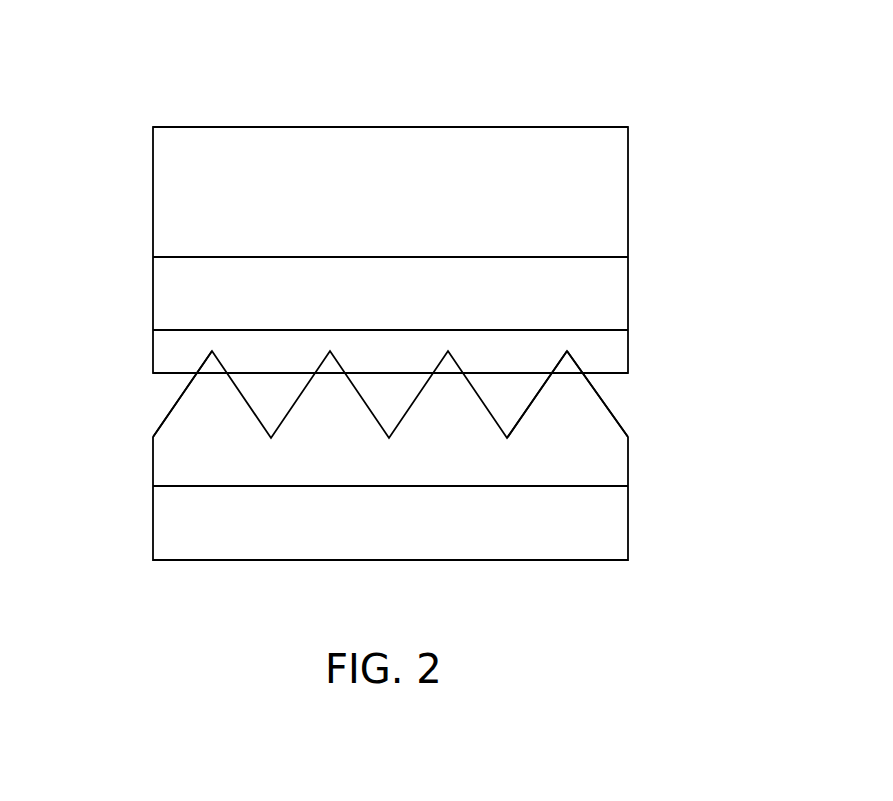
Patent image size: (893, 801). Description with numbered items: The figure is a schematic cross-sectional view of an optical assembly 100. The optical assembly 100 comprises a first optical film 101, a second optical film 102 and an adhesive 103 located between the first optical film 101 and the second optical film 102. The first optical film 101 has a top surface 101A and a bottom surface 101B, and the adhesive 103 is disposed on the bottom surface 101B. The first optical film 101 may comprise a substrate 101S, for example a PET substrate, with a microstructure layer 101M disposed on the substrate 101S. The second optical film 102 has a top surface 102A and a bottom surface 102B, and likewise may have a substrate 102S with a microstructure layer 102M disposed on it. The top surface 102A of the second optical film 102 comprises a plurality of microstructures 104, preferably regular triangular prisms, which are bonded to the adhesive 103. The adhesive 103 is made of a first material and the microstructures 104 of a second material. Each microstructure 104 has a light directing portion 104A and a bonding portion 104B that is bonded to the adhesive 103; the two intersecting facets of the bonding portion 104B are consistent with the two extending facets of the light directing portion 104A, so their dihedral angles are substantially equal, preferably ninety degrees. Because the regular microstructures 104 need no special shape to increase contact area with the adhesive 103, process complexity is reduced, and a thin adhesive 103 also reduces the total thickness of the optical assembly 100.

The optical assembly 100 is at (738, 34).
The first optical film 101 is at (253, 213).
The top surface 101A is at (518, 127).
The bottom surface 101B is at (573, 332).
The microstructure layer 101M is at (180, 175).
The substrate 101S is at (183, 275).
The second optical film 102 is at (293, 523).
The top surface 102A is at (167, 413).
The bottom surface 102B is at (490, 560).
The microstructure layer 102M is at (180, 445).
The substrate 102S is at (180, 530).
The adhesive 103 is at (612, 365).
The microstructures 104 is at (605, 405).
The light directing portion 104A is at (568, 405).
The bonding portion 104B is at (572, 364).